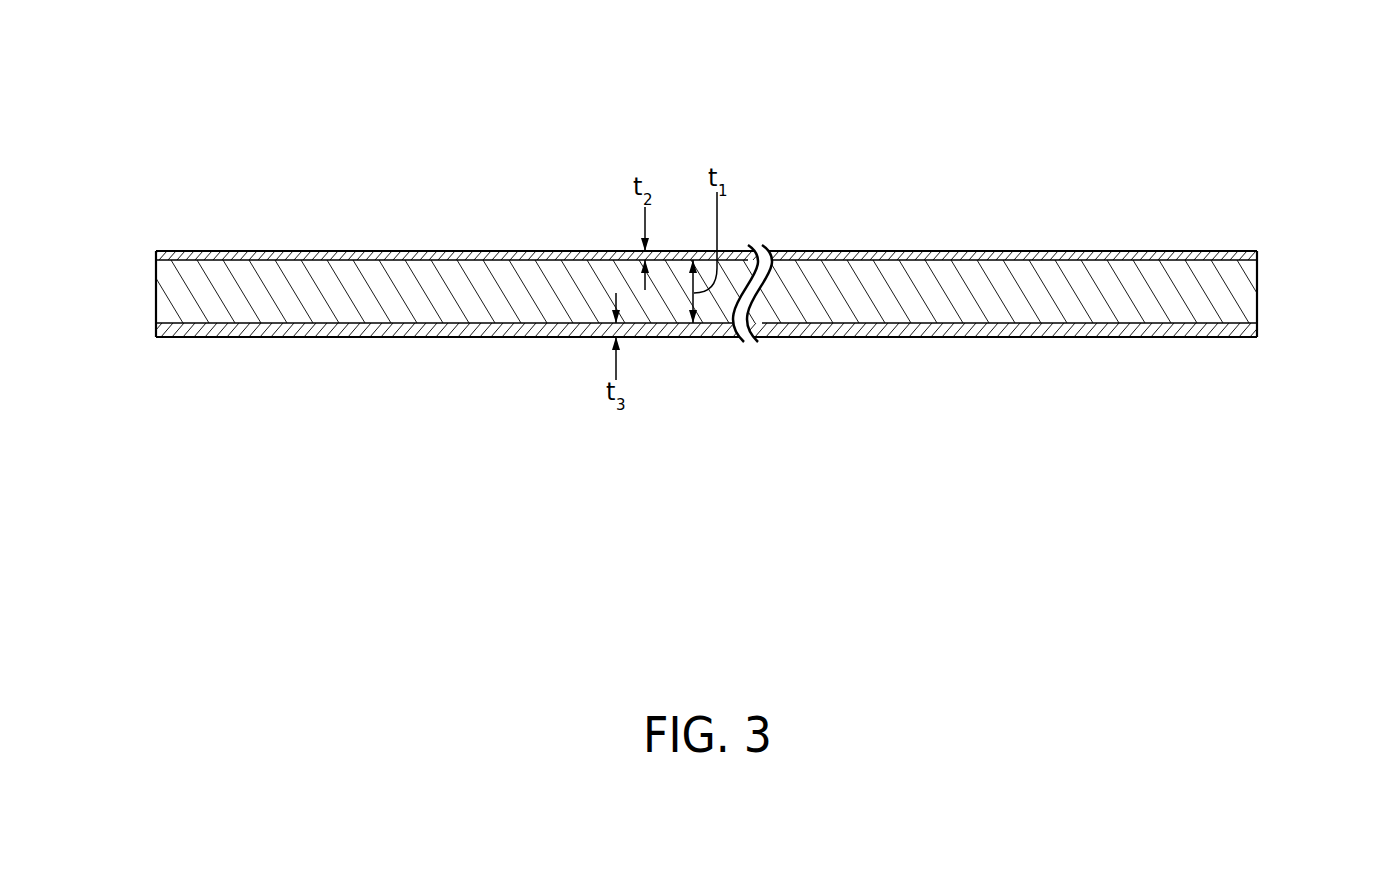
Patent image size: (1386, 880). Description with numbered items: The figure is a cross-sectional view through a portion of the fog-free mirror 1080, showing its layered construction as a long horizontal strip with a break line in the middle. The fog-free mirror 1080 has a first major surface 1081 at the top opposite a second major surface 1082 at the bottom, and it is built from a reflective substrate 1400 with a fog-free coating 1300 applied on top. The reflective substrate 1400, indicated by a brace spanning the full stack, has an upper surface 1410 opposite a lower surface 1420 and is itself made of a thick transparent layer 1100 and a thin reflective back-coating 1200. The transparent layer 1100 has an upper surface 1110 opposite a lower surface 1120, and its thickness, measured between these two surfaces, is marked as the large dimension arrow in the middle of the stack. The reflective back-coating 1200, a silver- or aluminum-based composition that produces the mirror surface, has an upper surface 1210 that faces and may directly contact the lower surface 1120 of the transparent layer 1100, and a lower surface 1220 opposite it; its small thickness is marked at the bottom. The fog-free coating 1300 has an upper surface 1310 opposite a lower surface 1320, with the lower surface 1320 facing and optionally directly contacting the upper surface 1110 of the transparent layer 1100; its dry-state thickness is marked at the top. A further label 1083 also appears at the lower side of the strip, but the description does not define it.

The fog-free mirror 1080 is at (1300, 177).
The reflective substrate 1400 is at (148, 251).
The transparent layer 1100 is at (1225, 288).
The upper surface of transparent layer 1110 is at (909, 260).
The lower surface of transparent layer 1120 is at (915, 325).
The fog-free coating 1300 is at (470, 250).
The upper surface of fog-free coating 1310 is at (1068, 251).
The lower surface of fog-free coating 1320 is at (1145, 261).
The reflective back-coating 1200 is at (1154, 334).
The upper surface of reflective back-coating 1210 is at (531, 324).
The lower surface of reflective back-coating 1220 is at (655, 337).
The upper surface of reflective substrate 1410 is at (275, 259).
The lower surface of reflective substrate 1420 is at (240, 338).
The first major surface 1081 is at (372, 251).
The second major surface 1082 is at (400, 338).
The bottom surface region 1083 is at (1051, 338).